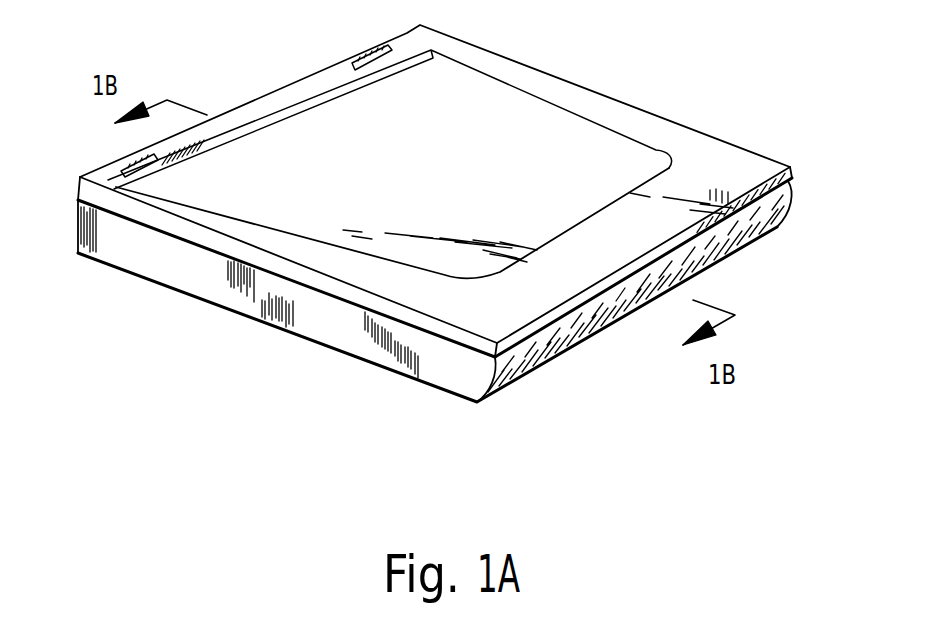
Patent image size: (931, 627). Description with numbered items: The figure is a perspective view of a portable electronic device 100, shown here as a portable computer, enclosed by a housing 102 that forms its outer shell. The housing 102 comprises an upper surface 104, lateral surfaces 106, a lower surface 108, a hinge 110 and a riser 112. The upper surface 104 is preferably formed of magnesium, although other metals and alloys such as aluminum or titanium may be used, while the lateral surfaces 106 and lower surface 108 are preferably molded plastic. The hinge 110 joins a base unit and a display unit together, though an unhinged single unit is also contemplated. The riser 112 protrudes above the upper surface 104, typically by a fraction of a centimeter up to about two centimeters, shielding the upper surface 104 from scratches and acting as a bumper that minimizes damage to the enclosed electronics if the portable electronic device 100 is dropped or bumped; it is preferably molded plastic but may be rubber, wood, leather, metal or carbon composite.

The portable electronic device 100 is at (233, 52).
The housing 102 is at (353, 336).
The upper surface 104 is at (460, 88).
The lateral surfaces 106 is at (137, 257).
The lower surface 108 is at (453, 373).
The hinge 110 is at (369, 51).
The riser 112 is at (710, 155).